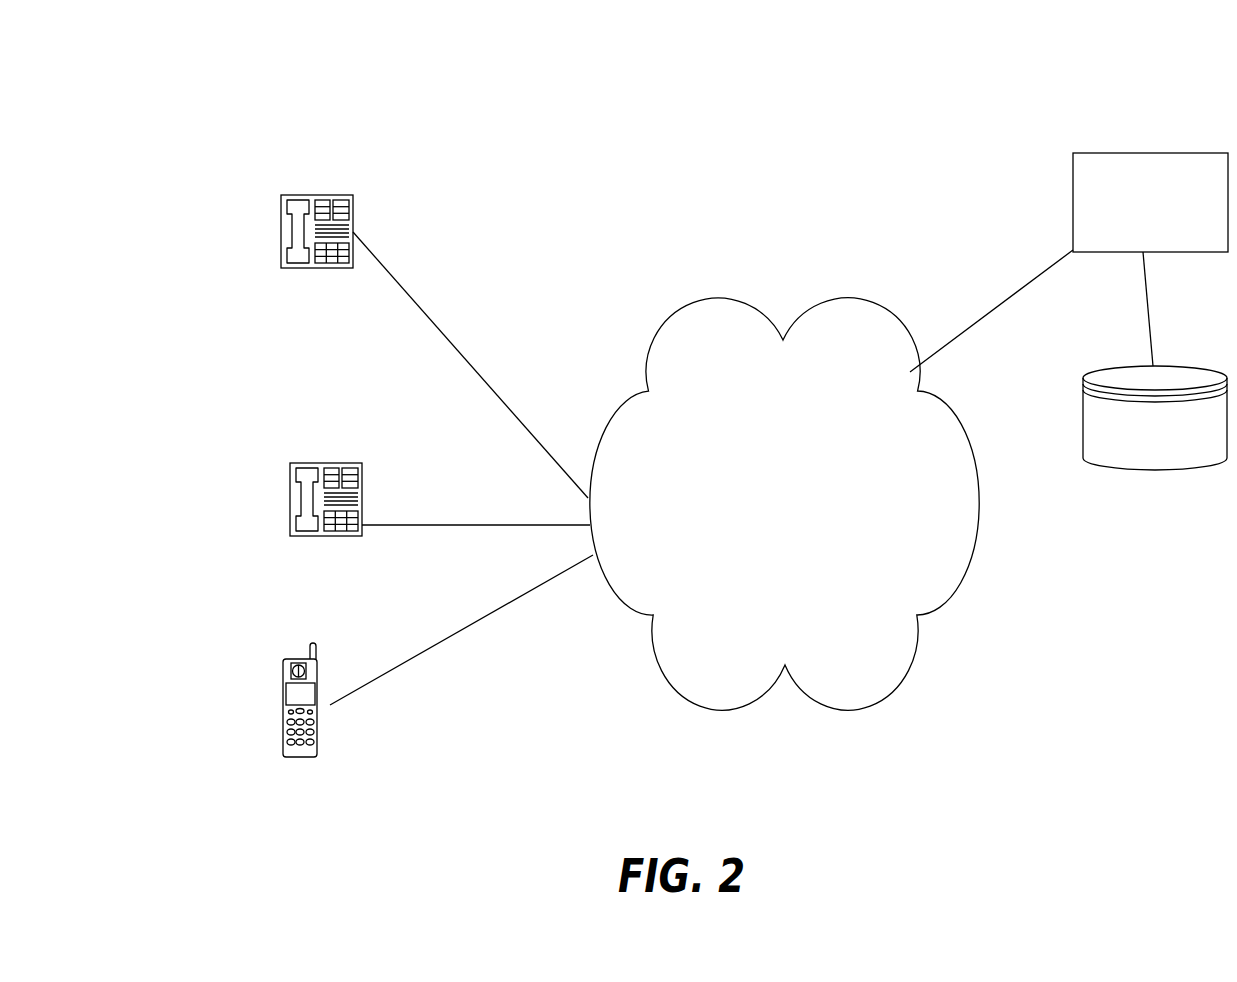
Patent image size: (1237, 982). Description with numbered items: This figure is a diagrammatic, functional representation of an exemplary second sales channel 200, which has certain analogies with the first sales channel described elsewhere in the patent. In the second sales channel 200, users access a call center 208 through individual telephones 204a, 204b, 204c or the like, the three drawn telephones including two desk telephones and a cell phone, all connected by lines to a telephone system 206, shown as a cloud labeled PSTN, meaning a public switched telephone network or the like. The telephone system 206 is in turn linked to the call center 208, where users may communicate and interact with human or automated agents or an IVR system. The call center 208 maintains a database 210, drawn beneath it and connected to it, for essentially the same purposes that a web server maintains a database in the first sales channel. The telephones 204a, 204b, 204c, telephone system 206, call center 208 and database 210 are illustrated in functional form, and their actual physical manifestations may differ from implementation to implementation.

The second sales channel 200 is at (571, 63).
The telephone 204a is at (300, 194).
The telephone 204b is at (322, 462).
The telephone 204c is at (283, 688).
The telephone system 206 is at (712, 292).
The call center 208 is at (1078, 152).
The database 210 is at (1150, 471).